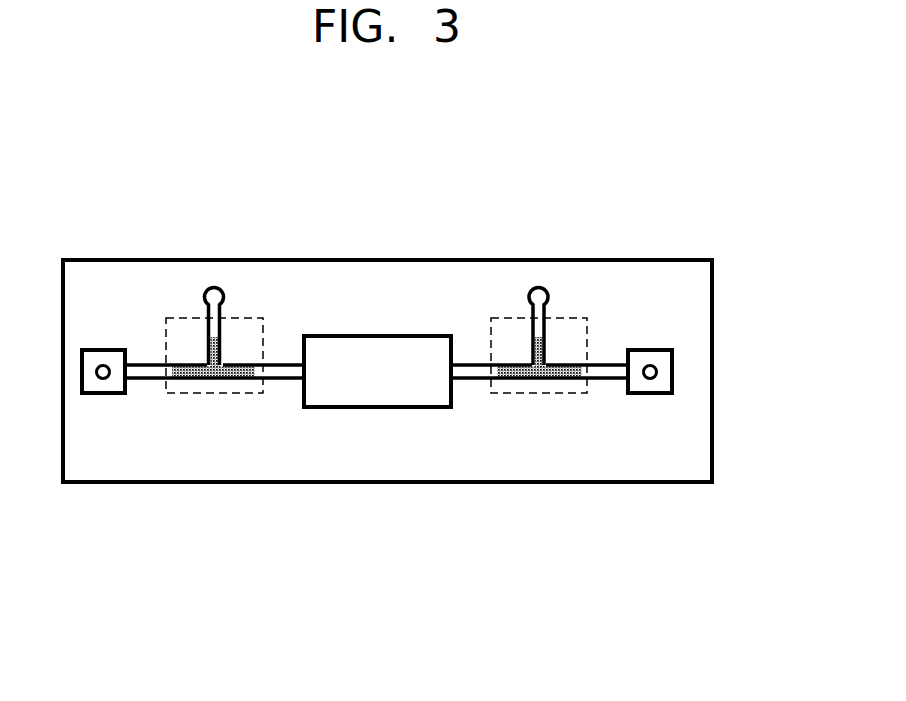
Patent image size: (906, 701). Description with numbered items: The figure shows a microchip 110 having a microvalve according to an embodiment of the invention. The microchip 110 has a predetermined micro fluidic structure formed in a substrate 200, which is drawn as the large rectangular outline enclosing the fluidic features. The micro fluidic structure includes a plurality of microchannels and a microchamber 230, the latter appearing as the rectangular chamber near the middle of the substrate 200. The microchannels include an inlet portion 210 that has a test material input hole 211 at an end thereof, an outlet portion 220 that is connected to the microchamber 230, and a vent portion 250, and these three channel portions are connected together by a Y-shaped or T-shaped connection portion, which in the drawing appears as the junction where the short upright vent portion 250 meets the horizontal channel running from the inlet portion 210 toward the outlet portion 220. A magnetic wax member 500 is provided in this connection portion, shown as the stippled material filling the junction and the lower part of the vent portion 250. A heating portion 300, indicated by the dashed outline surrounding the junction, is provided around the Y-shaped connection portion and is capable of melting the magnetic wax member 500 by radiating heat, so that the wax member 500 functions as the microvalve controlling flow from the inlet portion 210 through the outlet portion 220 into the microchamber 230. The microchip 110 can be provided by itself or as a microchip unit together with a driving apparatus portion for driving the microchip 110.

The microchip 110 is at (666, 207).
The substrate 200 is at (103, 272).
The inlet portion 210 is at (147, 380).
The test material input hole 211 is at (103, 380).
The outlet portion 220 is at (283, 380).
The microchamber 230 is at (375, 336).
The vent portion 250 is at (205, 323).
The heating portion 300 is at (262, 317).
The magnetic wax member 500 is at (215, 365).